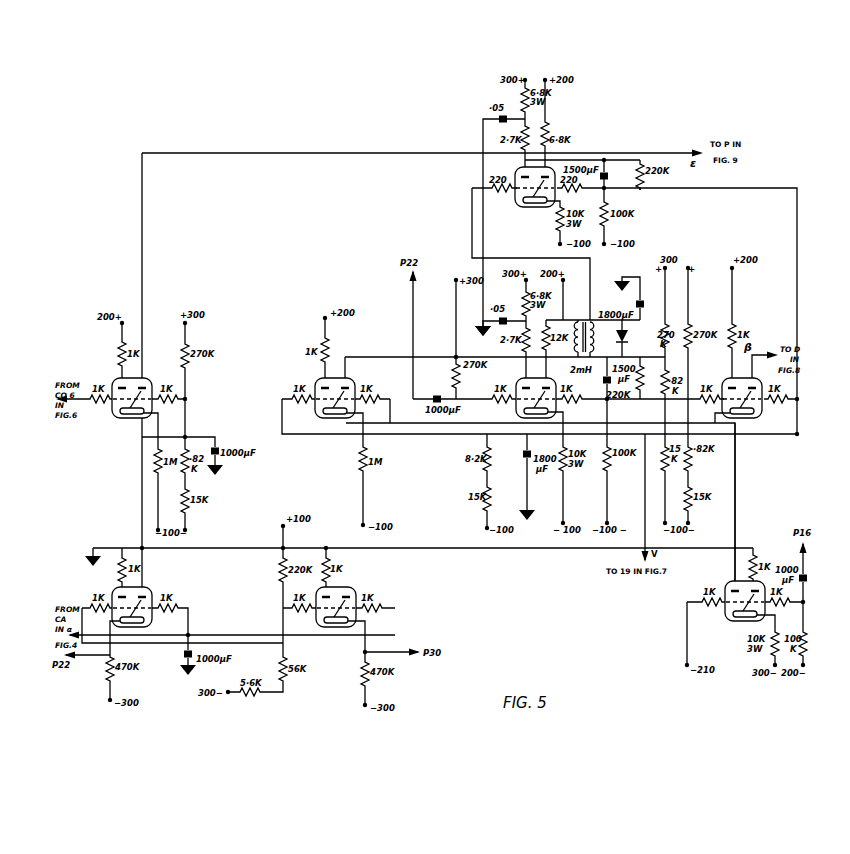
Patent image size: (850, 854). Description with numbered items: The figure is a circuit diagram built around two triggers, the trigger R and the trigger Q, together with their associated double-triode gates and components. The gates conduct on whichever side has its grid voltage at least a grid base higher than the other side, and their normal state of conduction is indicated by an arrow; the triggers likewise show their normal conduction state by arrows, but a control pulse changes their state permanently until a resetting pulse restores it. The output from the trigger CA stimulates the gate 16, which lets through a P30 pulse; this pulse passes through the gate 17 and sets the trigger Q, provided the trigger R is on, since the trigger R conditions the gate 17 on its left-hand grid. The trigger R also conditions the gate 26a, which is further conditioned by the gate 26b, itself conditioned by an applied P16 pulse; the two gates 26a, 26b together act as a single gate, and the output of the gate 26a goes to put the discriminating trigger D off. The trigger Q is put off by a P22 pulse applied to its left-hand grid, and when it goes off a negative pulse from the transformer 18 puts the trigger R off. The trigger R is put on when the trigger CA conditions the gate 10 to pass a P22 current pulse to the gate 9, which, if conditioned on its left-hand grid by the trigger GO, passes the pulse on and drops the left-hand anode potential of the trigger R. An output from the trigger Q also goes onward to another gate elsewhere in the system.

The gate 9 is at (150, 380).
The gate 10 is at (152, 589).
The gate 16 is at (356, 589).
The gate 17 is at (353, 380).
The transformer 18 is at (583, 320).
The gate 26a is at (724, 380).
The gate 26b is at (726, 587).
The trigger R is at (526, 209).
The trigger Q is at (518, 387).